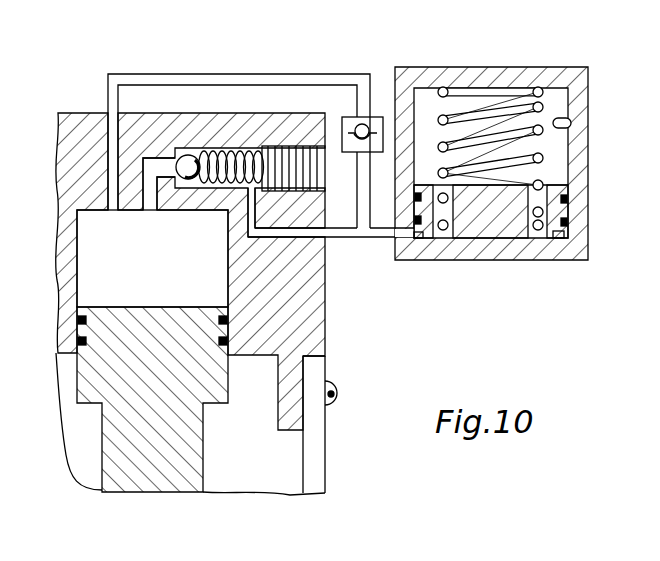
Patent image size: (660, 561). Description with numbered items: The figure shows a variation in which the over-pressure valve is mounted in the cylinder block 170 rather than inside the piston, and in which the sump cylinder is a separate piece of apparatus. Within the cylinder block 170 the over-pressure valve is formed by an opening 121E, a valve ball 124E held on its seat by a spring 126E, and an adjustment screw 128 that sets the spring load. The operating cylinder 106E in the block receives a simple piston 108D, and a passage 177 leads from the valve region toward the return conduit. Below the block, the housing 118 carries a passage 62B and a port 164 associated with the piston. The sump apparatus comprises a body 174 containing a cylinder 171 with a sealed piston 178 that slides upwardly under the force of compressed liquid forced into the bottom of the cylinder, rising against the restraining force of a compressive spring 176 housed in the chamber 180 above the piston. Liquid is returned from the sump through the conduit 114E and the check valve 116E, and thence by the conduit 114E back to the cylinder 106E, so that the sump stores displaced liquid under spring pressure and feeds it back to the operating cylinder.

The cylinder block 170 is at (84, 108).
The conduit 114E is at (138, 76).
The check valve 116E is at (352, 154).
The opening 121E is at (153, 186).
The valve ball 124E is at (189, 158).
The spring 126E is at (246, 160).
The adjustment screw 128 is at (301, 160).
The cylinder 106E is at (78, 253).
The passage 177 is at (275, 238).
The piston 108D is at (143, 328).
The housing 118 is at (102, 467).
The passage 62B is at (326, 463).
The port 164 is at (336, 390).
The body 174 is at (430, 67).
The chamber 180 is at (558, 104).
The cylinder 171 is at (553, 127).
The compressive spring 176 is at (492, 110).
The sealed piston 178 is at (490, 225).